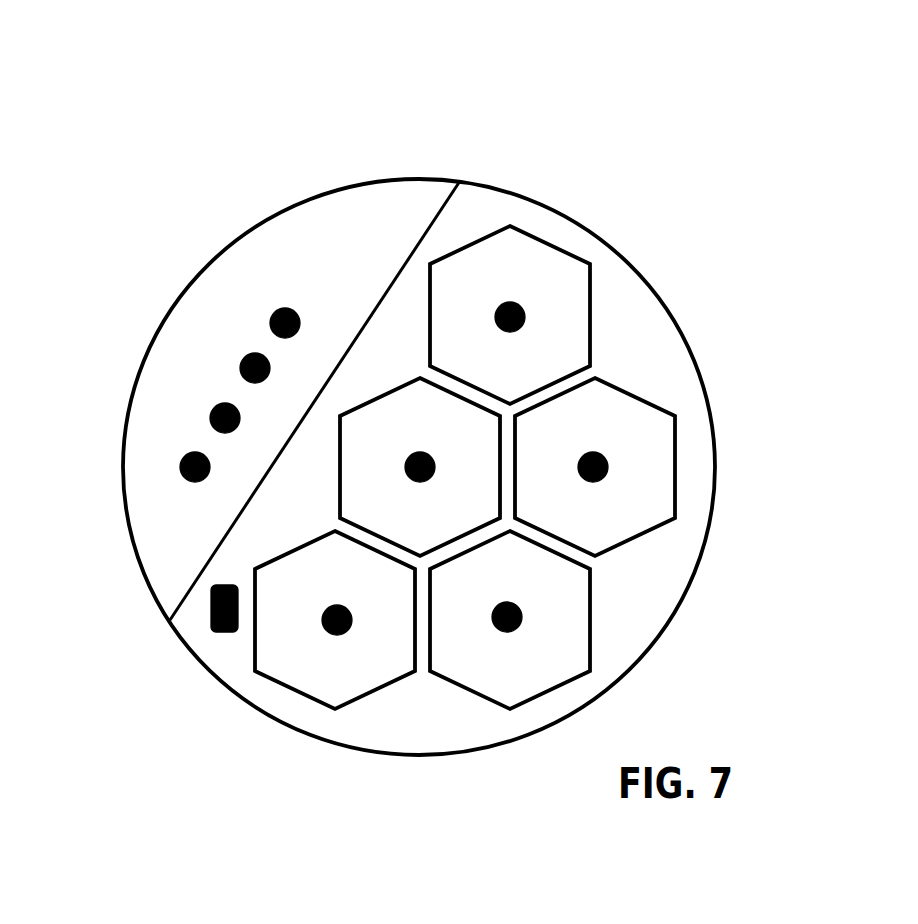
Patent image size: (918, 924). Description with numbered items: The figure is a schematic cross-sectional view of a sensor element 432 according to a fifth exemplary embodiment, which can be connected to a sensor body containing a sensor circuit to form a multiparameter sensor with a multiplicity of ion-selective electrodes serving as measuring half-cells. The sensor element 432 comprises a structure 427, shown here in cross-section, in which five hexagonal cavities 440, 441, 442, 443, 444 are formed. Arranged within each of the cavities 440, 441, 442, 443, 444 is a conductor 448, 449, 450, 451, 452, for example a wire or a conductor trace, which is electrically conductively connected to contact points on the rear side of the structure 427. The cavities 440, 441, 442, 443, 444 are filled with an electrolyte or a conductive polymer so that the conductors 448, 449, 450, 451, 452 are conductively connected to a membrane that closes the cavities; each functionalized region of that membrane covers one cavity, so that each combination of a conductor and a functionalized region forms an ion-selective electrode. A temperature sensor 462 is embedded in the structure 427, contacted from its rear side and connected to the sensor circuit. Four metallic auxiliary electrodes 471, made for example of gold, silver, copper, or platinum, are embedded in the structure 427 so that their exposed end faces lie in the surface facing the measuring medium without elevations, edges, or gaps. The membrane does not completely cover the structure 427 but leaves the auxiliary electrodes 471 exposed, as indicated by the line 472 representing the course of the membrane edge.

The sensor element 432 is at (148, 132).
The structure 427 is at (680, 350).
The line 472 is at (430, 227).
The hexagonal cavity 440 is at (567, 283).
The hexagonal cavity 441 is at (662, 453).
The hexagonal cavity 442 is at (478, 500).
The hexagonal cavity 443 is at (575, 636).
The hexagonal cavity 444 is at (367, 673).
The conductor 448 is at (511, 315).
The conductor 449 is at (595, 465).
The conductor 450 is at (422, 466).
The conductor 451 is at (508, 616).
The conductor 452 is at (338, 625).
The metallic auxiliary electrodes 471 is at (272, 318).
The temperature sensor 462 is at (215, 632).